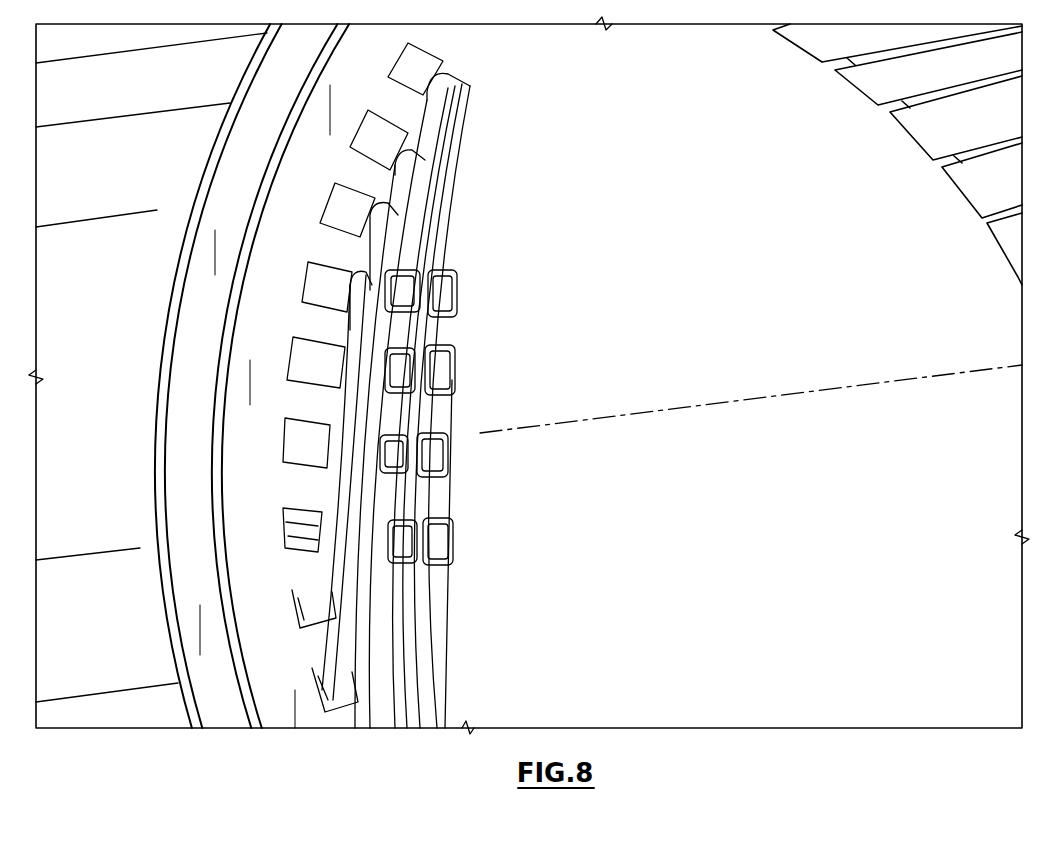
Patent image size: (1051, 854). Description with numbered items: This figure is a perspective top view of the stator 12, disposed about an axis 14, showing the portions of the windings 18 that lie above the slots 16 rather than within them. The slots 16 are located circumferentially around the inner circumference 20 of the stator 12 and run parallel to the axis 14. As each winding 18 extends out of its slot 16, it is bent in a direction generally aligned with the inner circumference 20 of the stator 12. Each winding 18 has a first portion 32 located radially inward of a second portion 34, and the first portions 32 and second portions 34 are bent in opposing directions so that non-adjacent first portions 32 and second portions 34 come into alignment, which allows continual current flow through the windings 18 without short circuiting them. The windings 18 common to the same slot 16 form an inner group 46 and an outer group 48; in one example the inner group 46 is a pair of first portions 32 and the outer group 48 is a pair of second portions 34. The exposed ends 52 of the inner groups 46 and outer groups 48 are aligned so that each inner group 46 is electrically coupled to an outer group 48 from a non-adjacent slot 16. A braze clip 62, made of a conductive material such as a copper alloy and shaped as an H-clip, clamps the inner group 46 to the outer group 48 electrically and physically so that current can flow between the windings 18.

The stator 12 is at (570, 372).
The axis 14 is at (862, 383).
The slots 16 is at (385, 130).
The windings 18 is at (442, 243).
The inner circumference 20 is at (486, 79).
The first portion 32 is at (447, 170).
The second portion 34 is at (368, 390).
The inner group 46 is at (432, 362).
The outer group 48 is at (425, 400).
The exposed ends 52 is at (443, 315).
The braze clip 62 is at (455, 272).